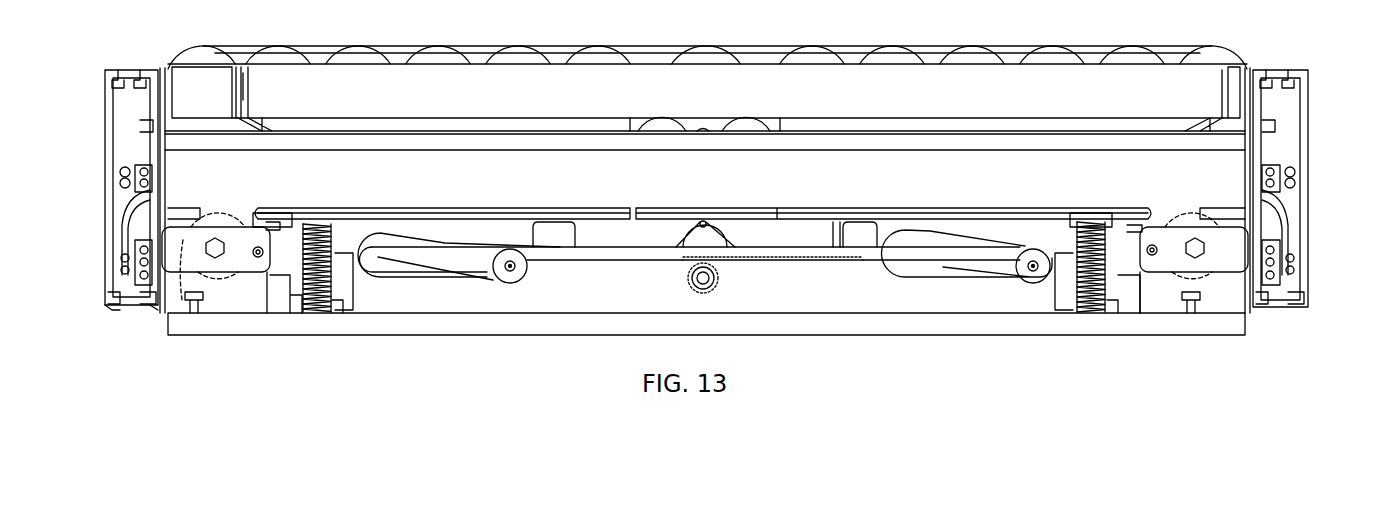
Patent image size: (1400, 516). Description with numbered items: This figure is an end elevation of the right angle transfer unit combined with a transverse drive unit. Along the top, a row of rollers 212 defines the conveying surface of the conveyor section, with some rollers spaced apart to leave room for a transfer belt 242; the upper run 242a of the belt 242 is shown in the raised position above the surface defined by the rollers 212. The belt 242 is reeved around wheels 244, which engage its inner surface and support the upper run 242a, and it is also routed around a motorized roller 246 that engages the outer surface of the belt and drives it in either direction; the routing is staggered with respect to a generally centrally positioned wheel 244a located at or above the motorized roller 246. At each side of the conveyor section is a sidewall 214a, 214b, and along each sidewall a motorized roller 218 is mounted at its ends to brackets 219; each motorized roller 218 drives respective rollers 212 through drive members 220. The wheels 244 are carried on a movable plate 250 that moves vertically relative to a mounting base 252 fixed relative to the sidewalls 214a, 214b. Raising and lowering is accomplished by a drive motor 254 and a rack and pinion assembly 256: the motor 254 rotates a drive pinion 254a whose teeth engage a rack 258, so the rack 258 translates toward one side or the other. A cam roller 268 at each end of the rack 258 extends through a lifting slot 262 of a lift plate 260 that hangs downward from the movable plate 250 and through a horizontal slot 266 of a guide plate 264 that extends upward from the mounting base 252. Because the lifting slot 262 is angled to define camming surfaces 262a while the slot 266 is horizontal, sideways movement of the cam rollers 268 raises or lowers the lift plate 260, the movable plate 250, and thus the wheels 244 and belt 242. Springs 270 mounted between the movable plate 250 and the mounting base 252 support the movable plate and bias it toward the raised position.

The rollers 212 is at (932, 85).
The sidewall 214a is at (1300, 152).
The sidewall 214b is at (105, 148).
The motorized roller 218 is at (1193, 278).
The bracket 219 is at (1230, 253).
The drive member 220 is at (222, 128).
The transfer belt 242 is at (477, 48).
The upper run 242a is at (1088, 50).
The wheel 244 is at (592, 60).
The wheel 244a is at (705, 58).
The motorized roller 246 is at (747, 125).
The movable plate 250 is at (957, 215).
The mounting base 252 is at (983, 330).
The drive motor 254 is at (710, 240).
The drive pinion 254a is at (718, 278).
The rack and pinion assembly 256 is at (581, 304).
The rack 258 is at (825, 280).
The lift plate 260 is at (495, 230).
The lifting slot 262 is at (380, 230).
The camming surface 262a is at (453, 263).
The guide plate 264 is at (625, 295).
The horizontal slot 266 is at (917, 275).
The cam roller 268 is at (1040, 278).
The spring 270 is at (1093, 313).